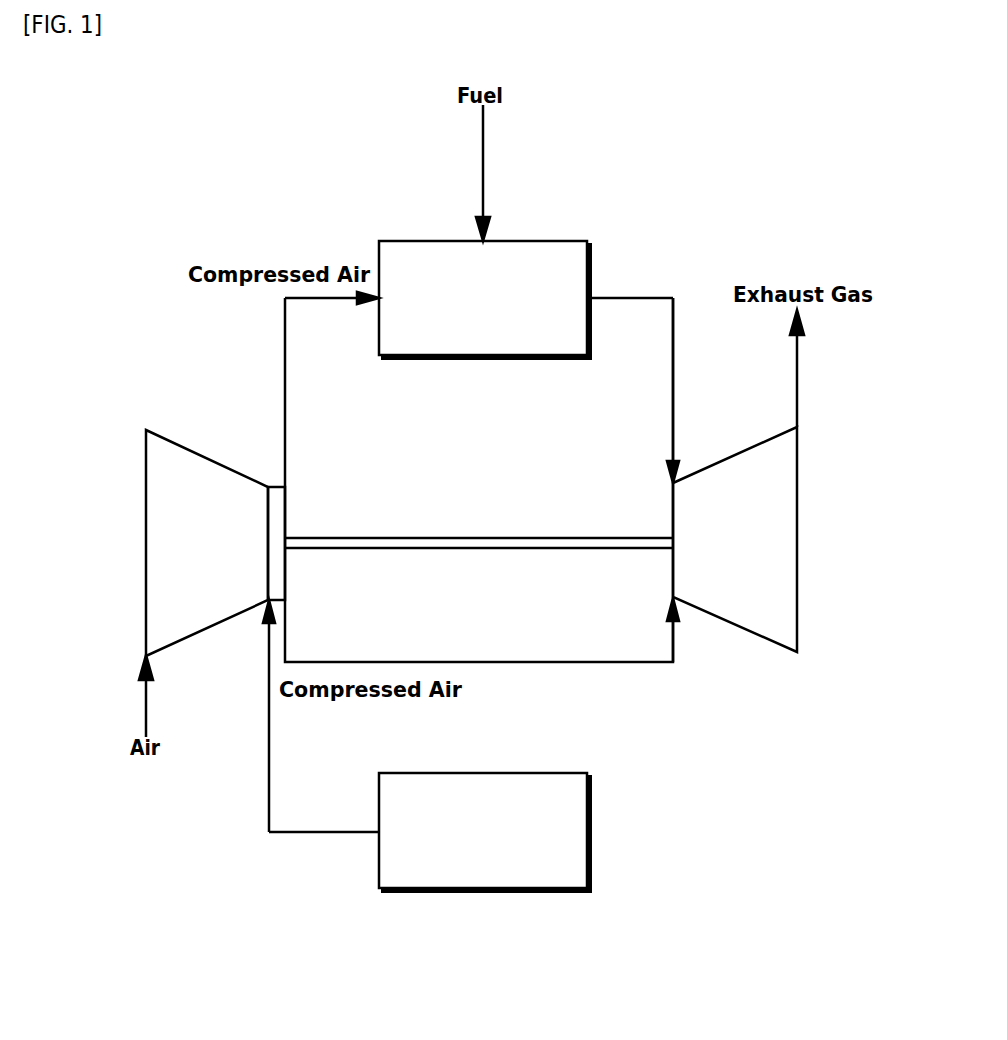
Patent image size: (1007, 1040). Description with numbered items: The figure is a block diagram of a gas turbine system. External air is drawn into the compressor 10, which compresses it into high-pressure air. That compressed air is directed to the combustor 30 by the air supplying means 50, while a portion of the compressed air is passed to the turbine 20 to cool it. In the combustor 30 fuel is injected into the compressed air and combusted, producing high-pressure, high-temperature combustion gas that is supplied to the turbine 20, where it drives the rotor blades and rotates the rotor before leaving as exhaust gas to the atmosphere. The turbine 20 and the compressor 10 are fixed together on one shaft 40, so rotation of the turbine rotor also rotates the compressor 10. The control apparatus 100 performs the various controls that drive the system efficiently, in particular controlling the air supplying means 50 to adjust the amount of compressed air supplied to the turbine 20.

The compressor 10 is at (207, 628).
The turbine 20 is at (733, 624).
The combustor 30 is at (395, 241).
The shaft 40 is at (436, 540).
The air supplying means 50 is at (275, 487).
The control apparatus 100 is at (592, 825).